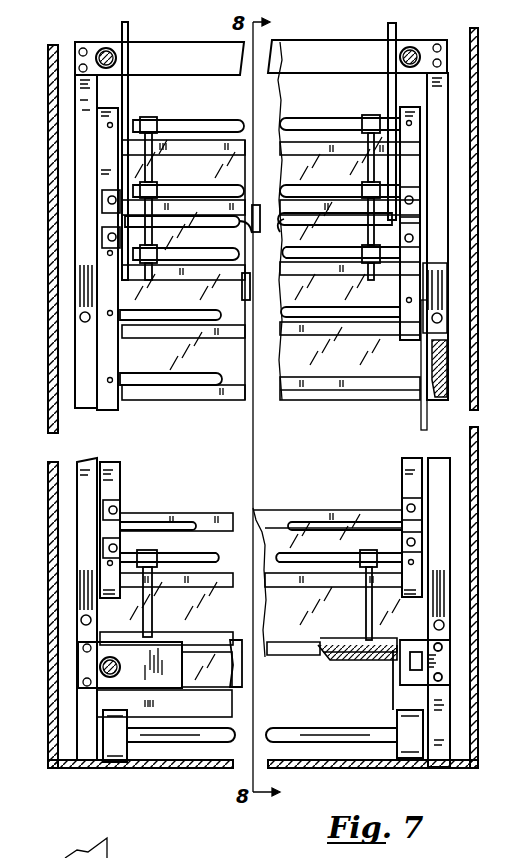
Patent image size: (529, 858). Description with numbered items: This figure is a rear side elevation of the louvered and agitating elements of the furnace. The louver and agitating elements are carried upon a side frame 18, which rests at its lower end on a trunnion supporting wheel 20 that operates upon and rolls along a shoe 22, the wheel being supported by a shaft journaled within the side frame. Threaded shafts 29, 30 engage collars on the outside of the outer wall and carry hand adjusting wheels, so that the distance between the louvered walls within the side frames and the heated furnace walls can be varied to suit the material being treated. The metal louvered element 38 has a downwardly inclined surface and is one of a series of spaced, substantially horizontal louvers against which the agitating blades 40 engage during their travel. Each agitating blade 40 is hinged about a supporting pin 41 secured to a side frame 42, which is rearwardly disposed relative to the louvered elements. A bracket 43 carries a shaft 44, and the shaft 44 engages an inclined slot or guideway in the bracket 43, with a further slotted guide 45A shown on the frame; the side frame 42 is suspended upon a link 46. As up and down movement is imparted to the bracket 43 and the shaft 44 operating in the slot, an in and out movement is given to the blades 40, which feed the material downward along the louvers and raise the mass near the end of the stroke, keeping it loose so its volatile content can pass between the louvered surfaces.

The side frame 18 is at (85, 97).
The trunnion supporting wheel 20 is at (192, 735).
The shoe 22 is at (330, 768).
The shaft 29 is at (98, 665).
The shaft 30 is at (96, 58).
The louvered element 38 is at (112, 245).
The agitating blade 40 is at (262, 284).
The supporting pin 41 is at (213, 190).
The side frame 42 is at (108, 150).
The bracket 43 is at (142, 197).
The shaft 44 is at (297, 228).
The slotted bracket 45A is at (80, 258).
The link 46 is at (128, 95).